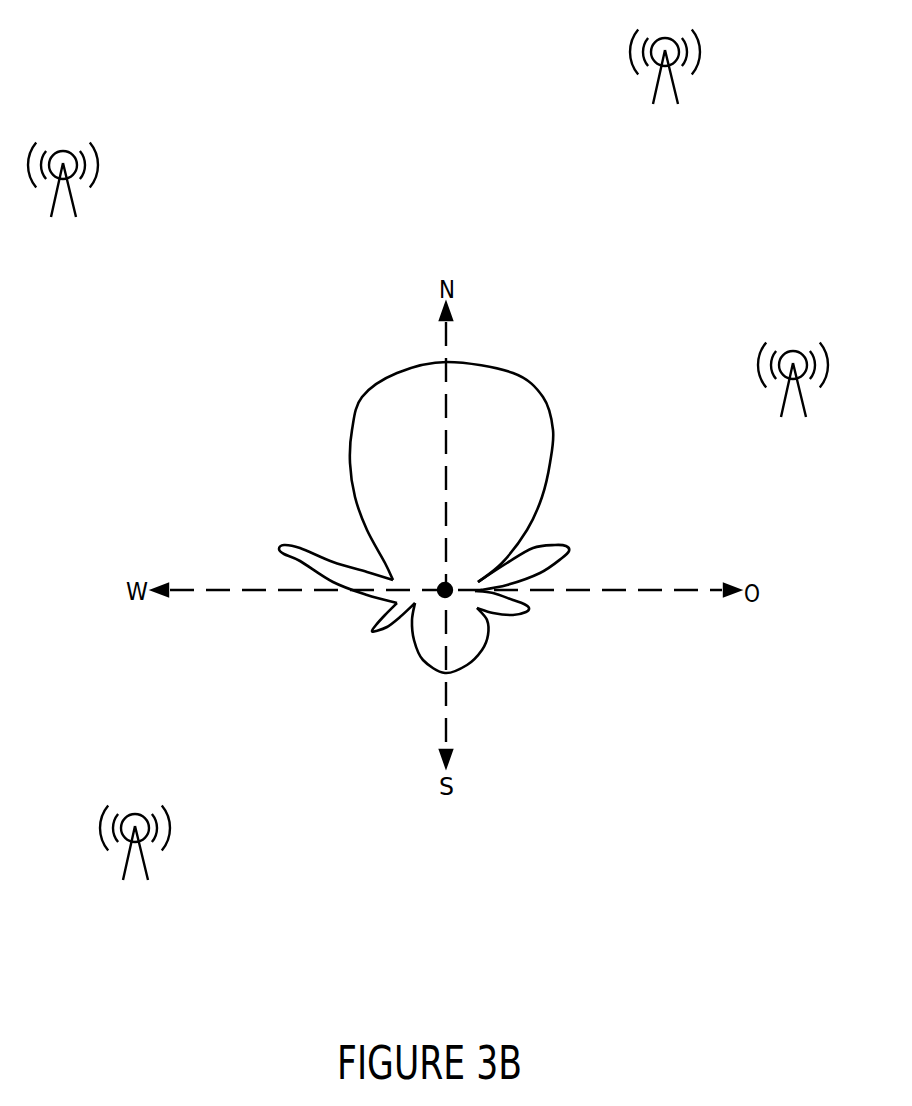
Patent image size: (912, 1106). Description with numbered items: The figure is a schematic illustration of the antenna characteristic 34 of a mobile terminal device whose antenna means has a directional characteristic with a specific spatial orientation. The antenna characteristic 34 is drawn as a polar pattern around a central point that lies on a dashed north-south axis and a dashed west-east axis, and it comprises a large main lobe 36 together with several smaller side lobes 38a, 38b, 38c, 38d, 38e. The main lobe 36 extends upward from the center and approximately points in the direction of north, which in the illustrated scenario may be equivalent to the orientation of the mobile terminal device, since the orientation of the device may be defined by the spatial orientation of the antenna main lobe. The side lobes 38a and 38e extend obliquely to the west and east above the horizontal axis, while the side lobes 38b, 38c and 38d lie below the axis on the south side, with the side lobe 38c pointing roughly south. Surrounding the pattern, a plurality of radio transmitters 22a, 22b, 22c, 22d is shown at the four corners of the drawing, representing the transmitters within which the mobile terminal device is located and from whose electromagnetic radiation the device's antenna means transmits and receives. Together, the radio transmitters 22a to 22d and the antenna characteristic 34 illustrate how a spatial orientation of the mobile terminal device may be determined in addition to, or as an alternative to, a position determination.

The radio transmitter 22a is at (150, 864).
The radio transmitter 22b is at (805, 398).
The radio transmitter 22c is at (680, 82).
The radio transmitter 22d is at (78, 195).
The antenna characteristic 34 is at (597, 452).
The main lobe 36 is at (513, 380).
The side lobe 38a is at (282, 542).
The side lobe 38b is at (373, 632).
The side lobe 38c is at (475, 662).
The side lobe 38d is at (525, 613).
The side lobe 38e is at (568, 550).